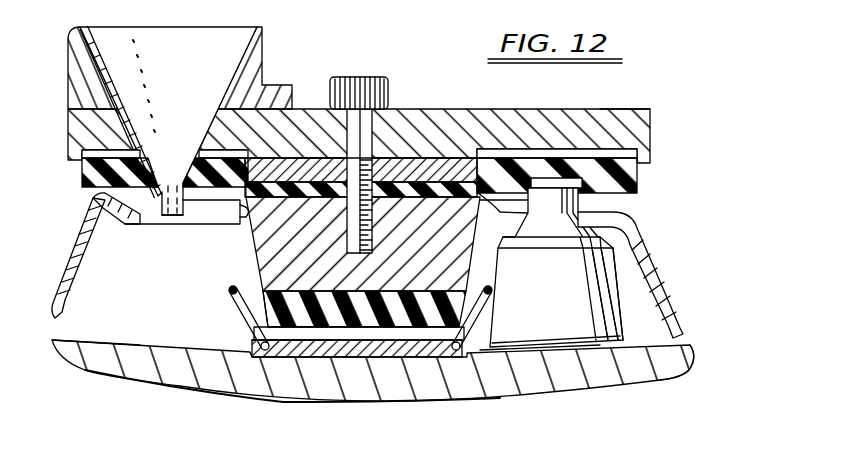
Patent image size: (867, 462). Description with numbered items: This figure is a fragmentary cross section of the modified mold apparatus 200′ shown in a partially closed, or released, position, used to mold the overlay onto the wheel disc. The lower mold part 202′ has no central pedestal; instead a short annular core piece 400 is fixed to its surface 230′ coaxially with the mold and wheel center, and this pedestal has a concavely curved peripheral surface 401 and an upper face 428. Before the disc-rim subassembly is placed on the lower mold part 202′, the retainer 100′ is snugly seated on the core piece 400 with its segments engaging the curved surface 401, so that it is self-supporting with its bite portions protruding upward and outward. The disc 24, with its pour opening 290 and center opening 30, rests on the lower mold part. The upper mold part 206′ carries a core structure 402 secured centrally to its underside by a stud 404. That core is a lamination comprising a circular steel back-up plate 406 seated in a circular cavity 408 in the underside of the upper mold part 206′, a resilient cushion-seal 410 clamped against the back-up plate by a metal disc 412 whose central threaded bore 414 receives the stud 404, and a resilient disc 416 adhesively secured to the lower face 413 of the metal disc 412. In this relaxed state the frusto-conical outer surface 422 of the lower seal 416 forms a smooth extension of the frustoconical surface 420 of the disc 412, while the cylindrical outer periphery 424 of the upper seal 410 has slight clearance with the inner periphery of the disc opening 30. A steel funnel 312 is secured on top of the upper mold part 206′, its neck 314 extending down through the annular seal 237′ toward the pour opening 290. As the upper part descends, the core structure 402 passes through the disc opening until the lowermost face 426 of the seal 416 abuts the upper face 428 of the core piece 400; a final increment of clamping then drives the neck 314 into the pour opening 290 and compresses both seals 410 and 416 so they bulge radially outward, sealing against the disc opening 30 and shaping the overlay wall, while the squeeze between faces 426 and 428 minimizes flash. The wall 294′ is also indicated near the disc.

The steel funnel 312 is at (262, 37).
The neck 314 is at (180, 182).
The stud 404 is at (362, 77).
The central threaded bore 414 is at (373, 226).
The circular steel back-up plate 406 is at (410, 157).
The circular cavity 408 is at (265, 168).
The cylindrical outer periphery 424 is at (482, 205).
The modified mold apparatus 200′ is at (638, 110).
The upper mold part 206′ is at (650, 130).
The annular seal 237′ is at (88, 174).
The pour opening 290 is at (86, 222).
The disc center opening 30 is at (244, 216).
The resilient cushion-seal 410 is at (256, 236).
The core structure 402 is at (246, 248).
The frustoconical surface 420 is at (254, 266).
The retainer 100′ is at (228, 293).
The frusto-conical outer surface 422 is at (262, 311).
The concavely curved peripheral surface 401 is at (263, 348).
The surface 230′ is at (143, 345).
The upper face 428 is at (253, 397).
The lowermost face 426 is at (318, 335).
The annular core piece 400 is at (347, 357).
The lower face 413 is at (408, 333).
The resilient disc 416 is at (452, 333).
The metal disc 412 is at (473, 261).
The body wall 294′ is at (613, 303).
The disc 24 is at (650, 249).
The lower mold part 202′ is at (672, 349).